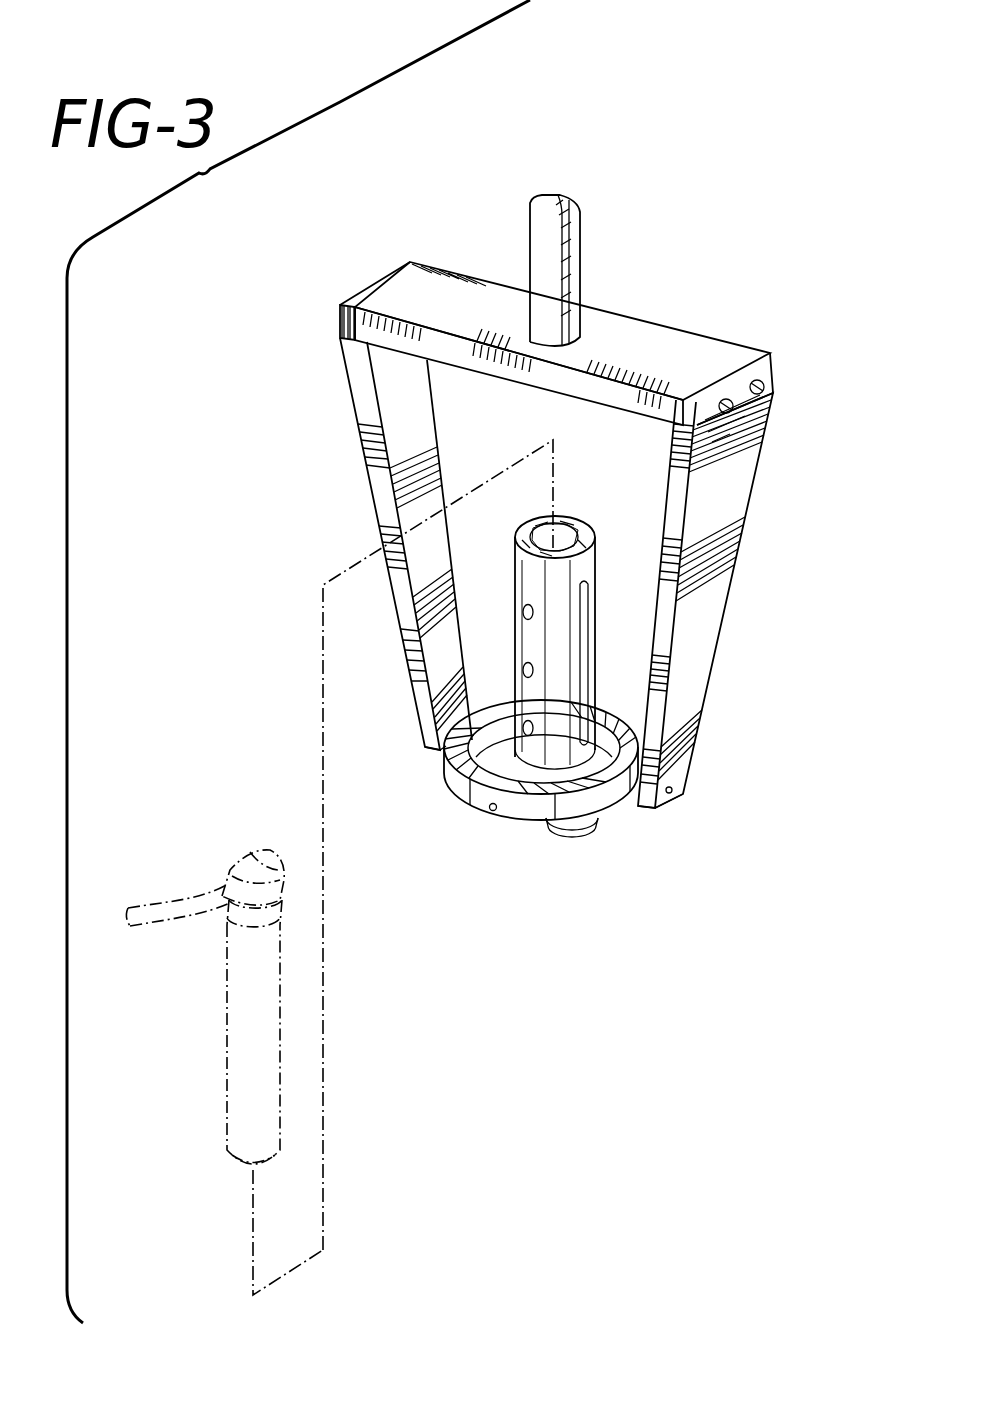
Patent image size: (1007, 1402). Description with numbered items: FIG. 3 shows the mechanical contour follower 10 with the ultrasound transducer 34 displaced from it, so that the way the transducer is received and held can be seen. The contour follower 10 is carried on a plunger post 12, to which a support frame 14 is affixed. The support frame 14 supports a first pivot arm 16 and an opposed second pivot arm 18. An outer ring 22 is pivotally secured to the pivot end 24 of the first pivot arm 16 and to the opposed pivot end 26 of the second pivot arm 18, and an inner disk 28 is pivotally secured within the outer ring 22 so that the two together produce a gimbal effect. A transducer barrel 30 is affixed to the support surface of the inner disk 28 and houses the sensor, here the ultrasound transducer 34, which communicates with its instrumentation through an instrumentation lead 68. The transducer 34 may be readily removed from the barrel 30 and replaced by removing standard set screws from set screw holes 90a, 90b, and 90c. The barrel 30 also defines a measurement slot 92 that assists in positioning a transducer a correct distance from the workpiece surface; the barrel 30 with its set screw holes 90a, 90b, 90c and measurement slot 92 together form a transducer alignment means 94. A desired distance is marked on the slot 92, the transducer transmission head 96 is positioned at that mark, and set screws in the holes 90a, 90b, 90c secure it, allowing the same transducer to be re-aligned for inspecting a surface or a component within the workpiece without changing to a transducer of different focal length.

The mechanical contour follower 10 is at (737, 148).
The plunger post 12 is at (567, 237).
The support frame 14 is at (670, 340).
The first pivot arm 16 is at (367, 413).
The second pivot arm 18 is at (716, 507).
The outer ring 22 is at (606, 792).
The pivot end of first pivot arm 24 is at (422, 703).
The pivot end of second pivot arm 26 is at (682, 753).
The inner disk 28 is at (563, 778).
The transducer barrel 30 is at (521, 575).
The ultrasound transducer 34 is at (245, 1040).
The instrumentation lead 68 is at (193, 887).
The set screw hole 90a is at (515, 614).
The set screw hole 90b is at (517, 671).
The set screw hole 90c is at (516, 734).
The measurement slot 92 is at (586, 624).
The transducer alignment means 94 is at (600, 513).
The transducer transmission head 96 is at (237, 1167).